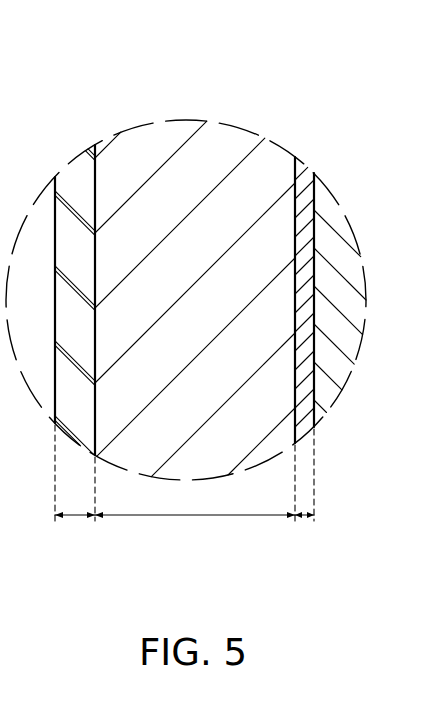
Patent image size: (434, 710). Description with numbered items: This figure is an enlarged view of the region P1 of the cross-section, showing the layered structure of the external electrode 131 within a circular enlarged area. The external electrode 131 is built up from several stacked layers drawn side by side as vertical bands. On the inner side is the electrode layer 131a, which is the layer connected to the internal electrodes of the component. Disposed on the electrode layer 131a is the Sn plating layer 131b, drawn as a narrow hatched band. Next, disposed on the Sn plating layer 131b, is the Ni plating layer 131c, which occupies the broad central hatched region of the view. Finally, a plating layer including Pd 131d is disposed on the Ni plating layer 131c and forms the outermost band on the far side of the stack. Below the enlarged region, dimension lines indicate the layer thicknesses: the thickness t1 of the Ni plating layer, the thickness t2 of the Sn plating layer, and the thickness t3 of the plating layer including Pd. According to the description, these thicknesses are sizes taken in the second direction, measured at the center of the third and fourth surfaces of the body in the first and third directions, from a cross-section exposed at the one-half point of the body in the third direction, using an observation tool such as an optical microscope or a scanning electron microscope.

The external electrode 131 is at (39, 62).
The electrode layer 131a is at (337, 215).
The Sn plating layer 131b is at (300, 175).
The Ni plating layer 131c is at (190, 150).
The plating layer including Pd 131d is at (75, 176).
The thickness of the Ni plating layer t1 is at (303, 528).
The thickness of the Sn plating layer t2 is at (195, 528).
The thickness of the plating layer including Pd t3 is at (75, 528).
The region P1 is at (165, 603).